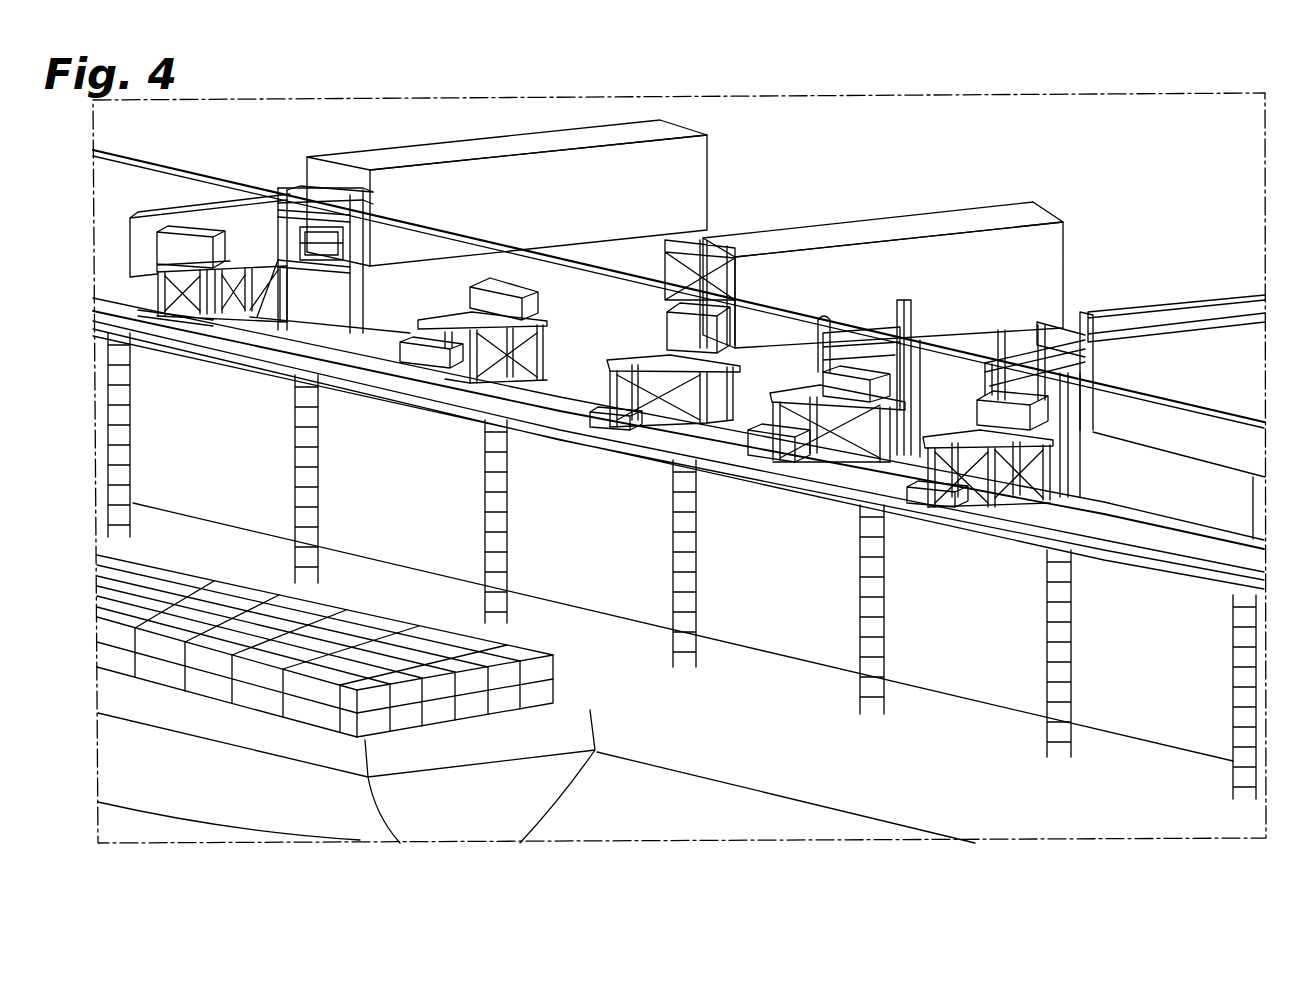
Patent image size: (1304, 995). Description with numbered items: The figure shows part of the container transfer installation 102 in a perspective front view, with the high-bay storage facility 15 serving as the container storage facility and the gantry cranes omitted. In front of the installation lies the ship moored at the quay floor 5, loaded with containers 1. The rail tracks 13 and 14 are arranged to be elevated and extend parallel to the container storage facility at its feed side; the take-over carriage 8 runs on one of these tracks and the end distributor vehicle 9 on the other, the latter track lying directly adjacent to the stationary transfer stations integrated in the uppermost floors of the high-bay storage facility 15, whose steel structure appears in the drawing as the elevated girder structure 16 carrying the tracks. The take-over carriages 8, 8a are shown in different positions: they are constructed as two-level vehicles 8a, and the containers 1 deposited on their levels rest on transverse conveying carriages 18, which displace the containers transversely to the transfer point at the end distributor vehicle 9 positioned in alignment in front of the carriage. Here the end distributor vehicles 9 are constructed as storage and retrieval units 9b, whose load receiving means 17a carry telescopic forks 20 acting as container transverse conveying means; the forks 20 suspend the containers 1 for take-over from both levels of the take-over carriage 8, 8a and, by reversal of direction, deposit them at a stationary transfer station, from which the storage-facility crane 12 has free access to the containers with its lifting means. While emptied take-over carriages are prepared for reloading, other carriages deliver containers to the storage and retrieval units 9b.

The container 1 is at (178, 233).
The quay floor 5 is at (788, 734).
The take-over carriage 8 is at (787, 399).
The two-level vehicle 8a is at (543, 343).
The end distributor vehicle 9 is at (382, 222).
The storage and retrieval unit 9b is at (373, 245).
The storage-facility crane 12 is at (340, 190).
The rail track 13 is at (1191, 541).
The rail track 14 is at (1197, 538).
The high-bay storage facility 15 is at (1203, 442).
The bridge girder 16 is at (545, 140).
The load receiving means 17a is at (297, 225).
The transverse conveying carriage 18 is at (155, 253).
The telescopic forks 20 is at (822, 333).
The container transfer installation 102 is at (1129, 152).